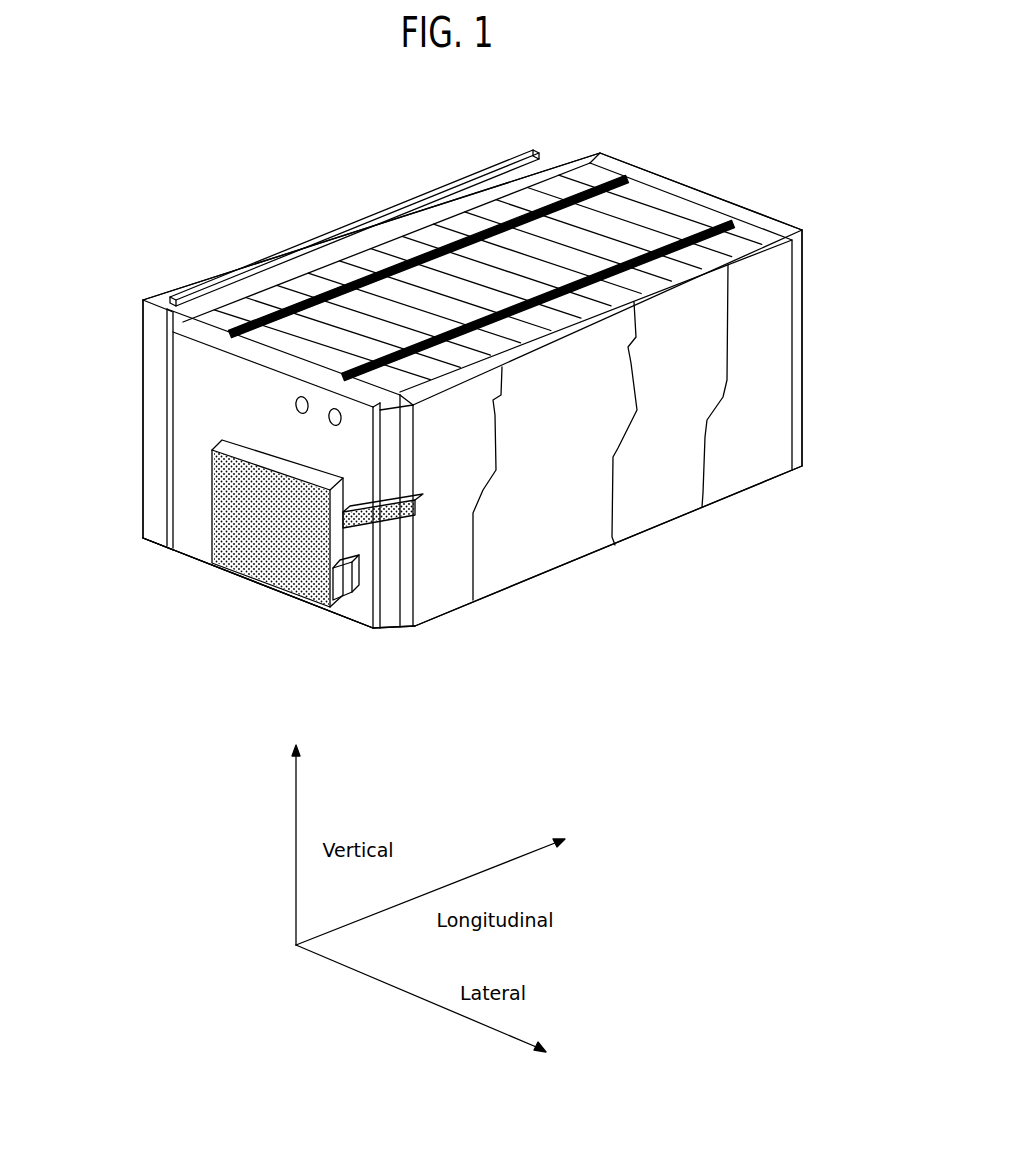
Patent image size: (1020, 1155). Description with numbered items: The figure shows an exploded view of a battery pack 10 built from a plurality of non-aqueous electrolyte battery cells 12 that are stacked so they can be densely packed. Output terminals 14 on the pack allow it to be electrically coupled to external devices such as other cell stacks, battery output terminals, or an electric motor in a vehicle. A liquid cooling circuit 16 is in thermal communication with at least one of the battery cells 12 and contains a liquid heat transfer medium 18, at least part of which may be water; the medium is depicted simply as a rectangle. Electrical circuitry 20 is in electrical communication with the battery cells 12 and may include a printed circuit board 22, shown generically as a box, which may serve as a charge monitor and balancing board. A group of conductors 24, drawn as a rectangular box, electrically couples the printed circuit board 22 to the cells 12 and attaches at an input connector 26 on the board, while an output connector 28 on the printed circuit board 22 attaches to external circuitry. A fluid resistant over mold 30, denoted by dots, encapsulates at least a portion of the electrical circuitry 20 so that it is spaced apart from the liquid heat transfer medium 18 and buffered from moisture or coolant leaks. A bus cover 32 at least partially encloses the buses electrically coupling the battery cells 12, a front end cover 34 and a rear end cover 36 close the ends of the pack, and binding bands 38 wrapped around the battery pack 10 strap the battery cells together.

The battery pack 10 is at (303, 129).
The non-aqueous electrolyte battery cells 12 is at (558, 170).
The output terminals 14 is at (327, 422).
The liquid cooling circuit 16 is at (165, 295).
The liquid heat transfer medium 18 is at (200, 290).
The electrical circuitry 20 is at (305, 662).
The printed circuit board 22 is at (240, 450).
The group of conductors 24 is at (393, 490).
The input connector 26 is at (343, 508).
The output connector 28 is at (357, 580).
The fluid resistant over mold 30 is at (327, 582).
The bus cover 32 is at (657, 510).
The front end cover 34 is at (225, 338).
The rear end cover 36 is at (630, 170).
The binding bands 38 is at (487, 322).